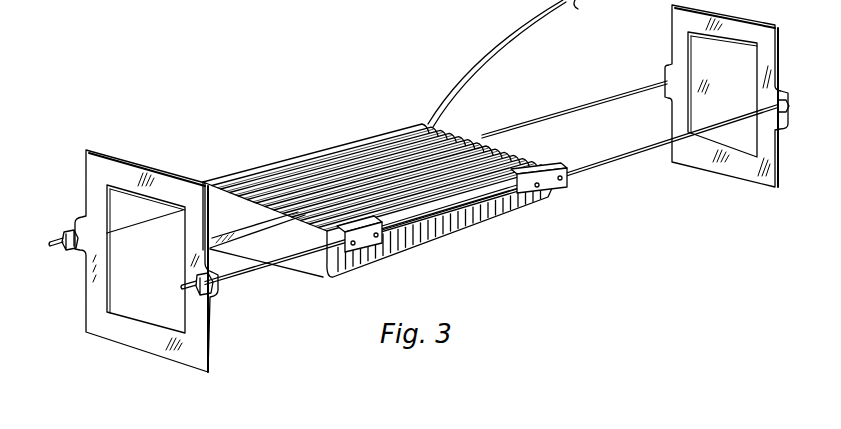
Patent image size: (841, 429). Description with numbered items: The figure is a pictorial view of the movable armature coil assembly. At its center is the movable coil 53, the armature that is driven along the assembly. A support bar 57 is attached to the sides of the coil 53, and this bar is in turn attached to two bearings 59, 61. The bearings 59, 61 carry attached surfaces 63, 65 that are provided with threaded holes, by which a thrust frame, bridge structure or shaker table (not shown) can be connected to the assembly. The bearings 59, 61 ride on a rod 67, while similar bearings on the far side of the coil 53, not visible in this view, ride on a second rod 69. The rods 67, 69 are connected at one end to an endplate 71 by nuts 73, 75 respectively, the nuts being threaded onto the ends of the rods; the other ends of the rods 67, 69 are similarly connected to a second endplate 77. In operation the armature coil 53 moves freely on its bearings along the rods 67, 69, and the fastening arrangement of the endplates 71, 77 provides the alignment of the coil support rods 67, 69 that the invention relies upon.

The movable coil 53 is at (312, 167).
The support bar 57 is at (458, 198).
The bearing 59 is at (558, 162).
The bearing 61 is at (397, 237).
The attached surface 63 is at (365, 240).
The attached surface 65 is at (560, 182).
The rod 67 is at (263, 267).
The rod 69 is at (144, 222).
The endplate 71 is at (185, 352).
The nut 73 is at (208, 297).
The nut 75 is at (75, 225).
The endplate 77 is at (678, 48).